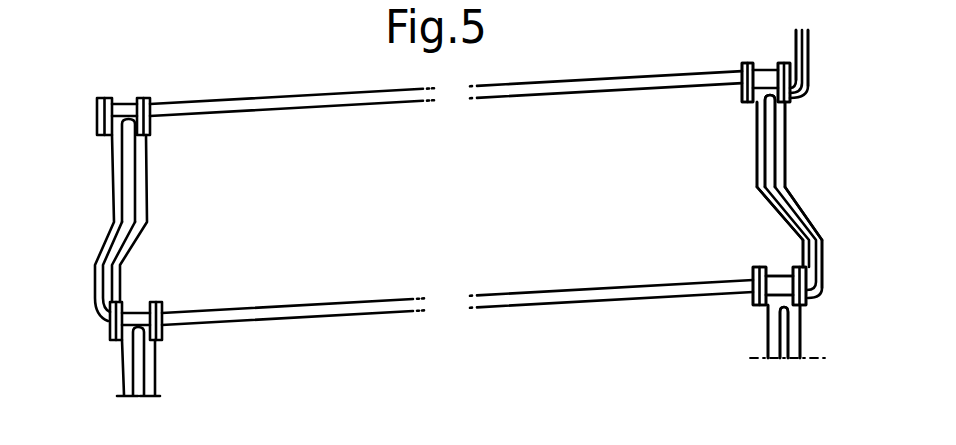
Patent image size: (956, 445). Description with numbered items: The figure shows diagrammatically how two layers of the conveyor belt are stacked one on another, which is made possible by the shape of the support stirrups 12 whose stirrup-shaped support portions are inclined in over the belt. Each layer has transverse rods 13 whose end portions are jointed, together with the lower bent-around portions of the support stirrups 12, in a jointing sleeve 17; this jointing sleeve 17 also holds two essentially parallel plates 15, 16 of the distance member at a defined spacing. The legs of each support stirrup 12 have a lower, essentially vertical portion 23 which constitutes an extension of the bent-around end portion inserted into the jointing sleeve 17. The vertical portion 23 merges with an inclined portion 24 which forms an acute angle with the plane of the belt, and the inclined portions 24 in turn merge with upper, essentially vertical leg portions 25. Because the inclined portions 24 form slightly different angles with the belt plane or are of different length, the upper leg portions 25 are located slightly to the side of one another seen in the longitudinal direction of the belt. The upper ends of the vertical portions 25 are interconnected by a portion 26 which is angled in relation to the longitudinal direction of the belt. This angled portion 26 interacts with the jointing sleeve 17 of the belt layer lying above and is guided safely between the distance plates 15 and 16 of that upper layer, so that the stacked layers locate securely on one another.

The support stirrup 12 is at (97, 163).
The transverse rod 13 is at (575, 101).
The plate 15 is at (792, 88).
The plate 16 is at (744, 97).
The jointing sleeve 17 is at (779, 276).
The lower vertical portion 23 is at (809, 52).
The inclined portion 24 is at (779, 215).
The upper vertical leg portion 25 is at (758, 150).
The angled connecting portion 26 is at (763, 72).